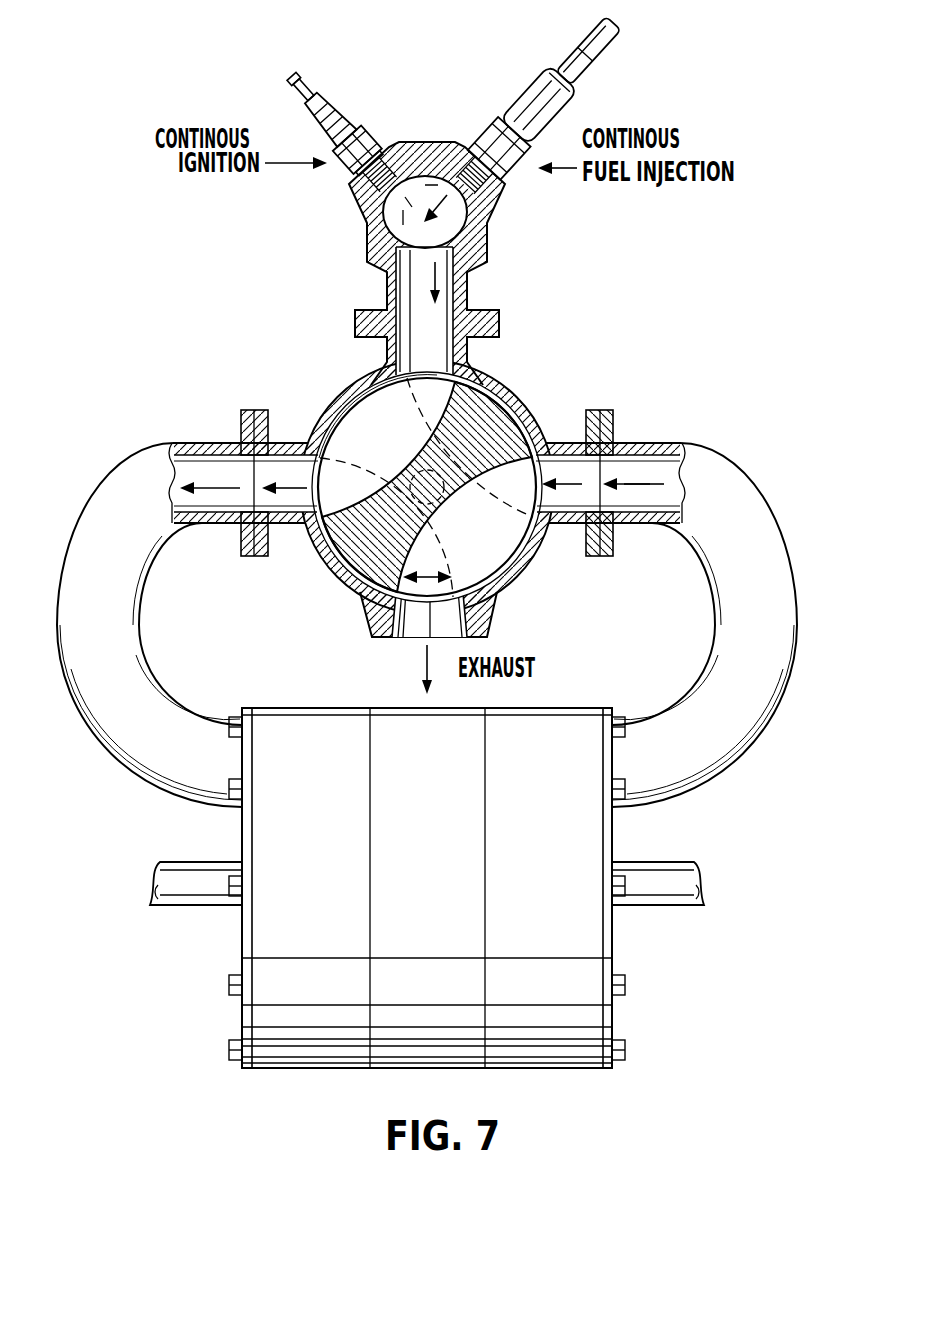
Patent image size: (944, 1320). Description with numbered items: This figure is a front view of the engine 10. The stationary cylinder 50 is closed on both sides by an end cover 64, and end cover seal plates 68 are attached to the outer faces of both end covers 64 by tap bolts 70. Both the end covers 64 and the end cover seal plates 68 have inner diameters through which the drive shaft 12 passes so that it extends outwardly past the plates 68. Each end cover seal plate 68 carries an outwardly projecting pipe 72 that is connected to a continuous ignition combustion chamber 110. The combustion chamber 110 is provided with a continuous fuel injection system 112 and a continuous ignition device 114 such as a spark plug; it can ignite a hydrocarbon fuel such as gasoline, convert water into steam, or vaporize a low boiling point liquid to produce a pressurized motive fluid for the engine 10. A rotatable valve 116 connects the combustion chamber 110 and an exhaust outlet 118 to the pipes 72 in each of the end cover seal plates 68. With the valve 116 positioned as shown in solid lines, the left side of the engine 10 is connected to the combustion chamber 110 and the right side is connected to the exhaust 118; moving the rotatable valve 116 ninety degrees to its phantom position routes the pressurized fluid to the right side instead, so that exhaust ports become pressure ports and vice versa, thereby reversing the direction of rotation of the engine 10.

The engine 10 is at (437, 889).
The drive shaft 12 is at (193, 890).
The stationary cylinder 50 is at (403, 1028).
The end cover 64 is at (268, 1020).
The end cover seal plate 68 is at (242, 1015).
The tap bolts 70 is at (228, 985).
The pipe 72 is at (118, 722).
The combustion chamber 110 is at (400, 240).
The continuous fuel injection system 112 is at (513, 90).
The continuous ignition device 114 is at (323, 100).
The rotatable valve 116 is at (495, 432).
The exhaust outlet 118 is at (415, 620).